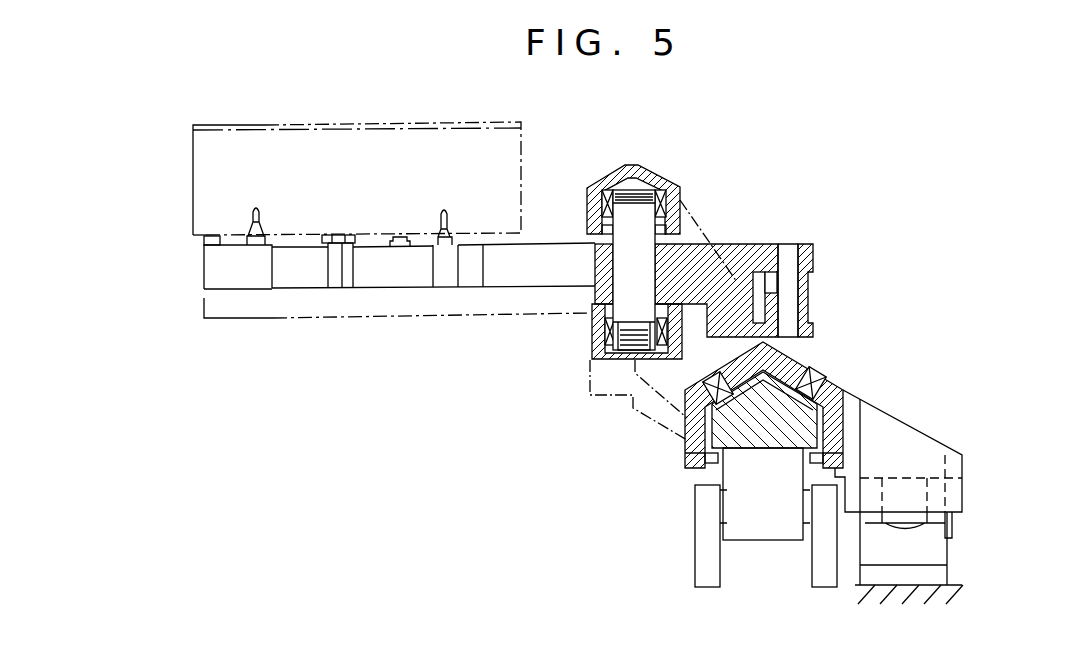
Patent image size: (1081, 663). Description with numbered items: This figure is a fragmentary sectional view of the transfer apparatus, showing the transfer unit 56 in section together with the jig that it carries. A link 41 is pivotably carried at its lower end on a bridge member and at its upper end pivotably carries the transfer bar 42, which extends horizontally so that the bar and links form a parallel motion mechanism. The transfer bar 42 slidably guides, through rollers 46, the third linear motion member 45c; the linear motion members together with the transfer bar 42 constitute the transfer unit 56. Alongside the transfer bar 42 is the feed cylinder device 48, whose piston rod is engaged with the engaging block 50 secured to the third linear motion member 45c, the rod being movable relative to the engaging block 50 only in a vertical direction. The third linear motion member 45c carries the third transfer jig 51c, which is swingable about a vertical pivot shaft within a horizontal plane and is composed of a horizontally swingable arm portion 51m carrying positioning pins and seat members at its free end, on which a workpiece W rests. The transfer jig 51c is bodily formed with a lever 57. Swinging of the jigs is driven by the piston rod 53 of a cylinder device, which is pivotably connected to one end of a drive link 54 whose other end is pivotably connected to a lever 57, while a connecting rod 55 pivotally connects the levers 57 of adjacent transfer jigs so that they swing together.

The workpiece W is at (210, 177).
The third transfer jig 51c is at (268, 304).
The arm portion 51m is at (493, 275).
The piston rod 53 is at (620, 288).
The lever 57 is at (757, 240).
The connecting rod 55 is at (812, 282).
The drive link 54 is at (812, 308).
The transfer unit 56 is at (570, 440).
The third linear motion member 45c is at (687, 407).
The transfer bar 42 is at (690, 435).
The rollers 46 is at (827, 377).
The links 41 is at (815, 567).
The engaging block 50 is at (962, 478).
The feed cylinder device 48 is at (966, 530).